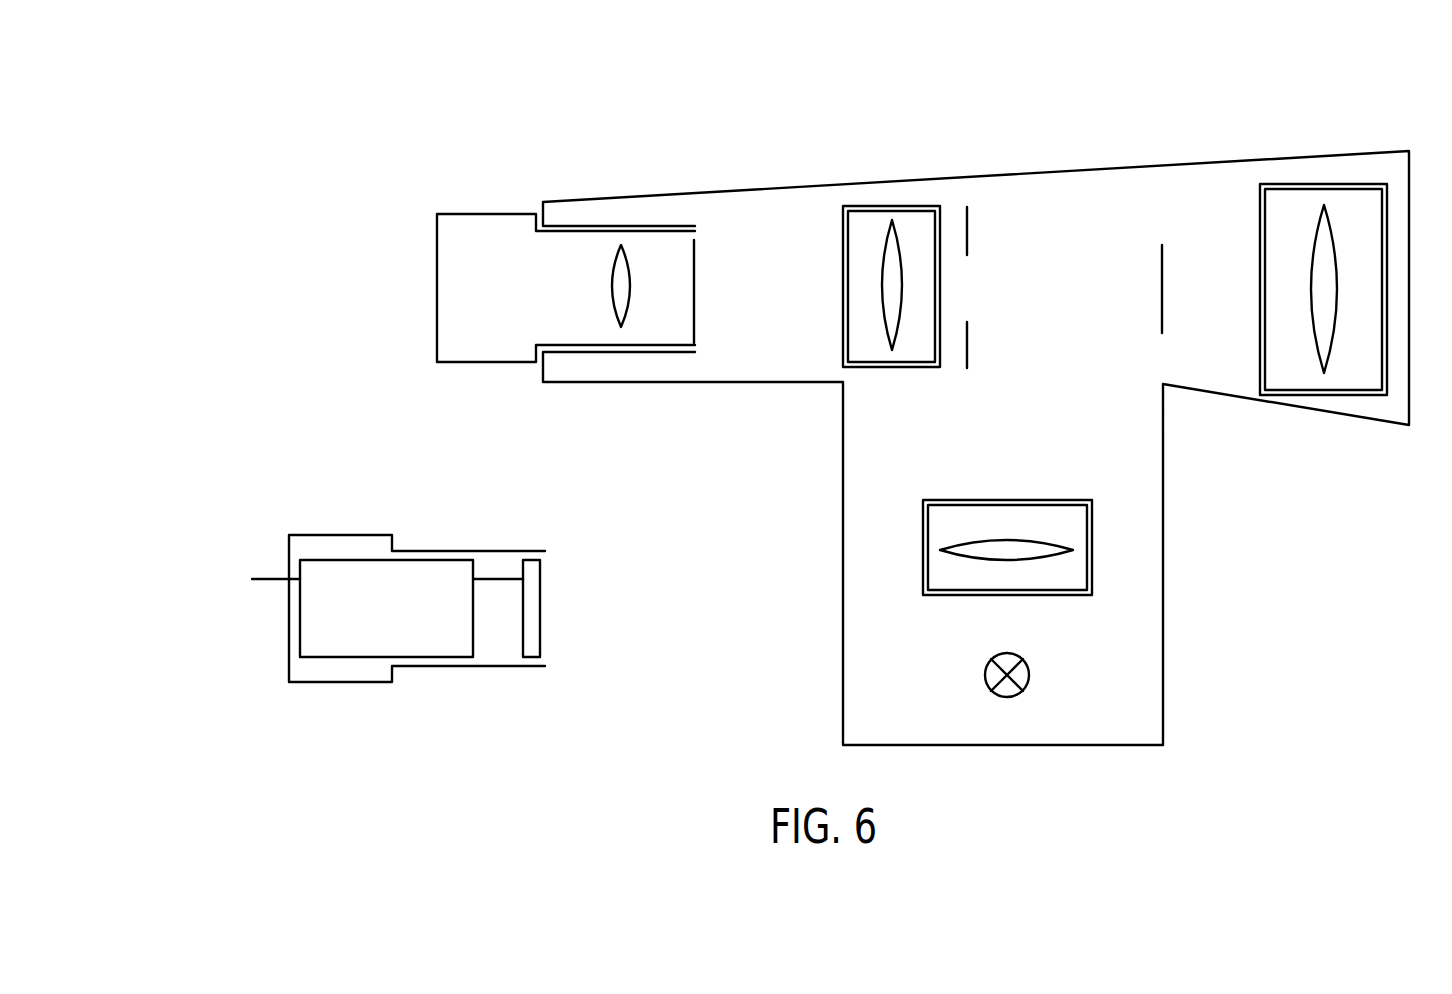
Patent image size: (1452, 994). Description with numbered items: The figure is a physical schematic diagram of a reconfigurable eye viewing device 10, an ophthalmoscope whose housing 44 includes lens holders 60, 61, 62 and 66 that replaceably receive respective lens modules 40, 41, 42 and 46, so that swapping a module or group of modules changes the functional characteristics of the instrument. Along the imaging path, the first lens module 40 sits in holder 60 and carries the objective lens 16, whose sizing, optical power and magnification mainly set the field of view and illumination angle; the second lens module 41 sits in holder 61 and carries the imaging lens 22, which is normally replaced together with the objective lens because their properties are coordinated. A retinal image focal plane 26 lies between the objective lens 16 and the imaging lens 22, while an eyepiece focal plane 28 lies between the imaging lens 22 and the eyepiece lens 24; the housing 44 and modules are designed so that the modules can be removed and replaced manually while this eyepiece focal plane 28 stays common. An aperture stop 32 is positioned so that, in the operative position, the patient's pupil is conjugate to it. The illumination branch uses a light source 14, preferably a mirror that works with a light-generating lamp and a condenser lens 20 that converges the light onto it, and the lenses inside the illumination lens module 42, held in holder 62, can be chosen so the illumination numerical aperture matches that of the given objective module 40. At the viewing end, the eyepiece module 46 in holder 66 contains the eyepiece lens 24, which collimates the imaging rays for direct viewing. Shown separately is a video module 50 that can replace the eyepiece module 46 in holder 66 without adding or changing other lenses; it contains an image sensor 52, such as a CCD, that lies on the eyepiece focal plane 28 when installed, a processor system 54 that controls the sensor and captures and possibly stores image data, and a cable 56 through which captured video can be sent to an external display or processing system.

The eye viewing device 10 is at (780, 100).
The light source 14 is at (1011, 228).
The objective lens 16 is at (1312, 227).
The condenser lens 20 is at (962, 565).
The imaging lens 22 is at (885, 346).
The eyepiece lens 24 is at (605, 278).
The retinal image focal plane 26 is at (1162, 278).
The eyepiece focal plane 28 is at (694, 278).
The aperture stop 32 is at (972, 222).
The first lens module 40 is at (1266, 215).
The second lens module 41 is at (848, 248).
The illumination lens module 42 is at (976, 505).
The housing 44 is at (918, 179).
The eyepiece module 46 is at (480, 214).
The video module 50 is at (333, 535).
The image sensor 52 is at (541, 608).
The processor system 54 is at (360, 657).
The cable 56 is at (263, 579).
The lens holder 60 is at (1383, 370).
The lens holder 61 is at (936, 334).
The lens holder 62 is at (1088, 580).
The lens holder 66 is at (638, 352).